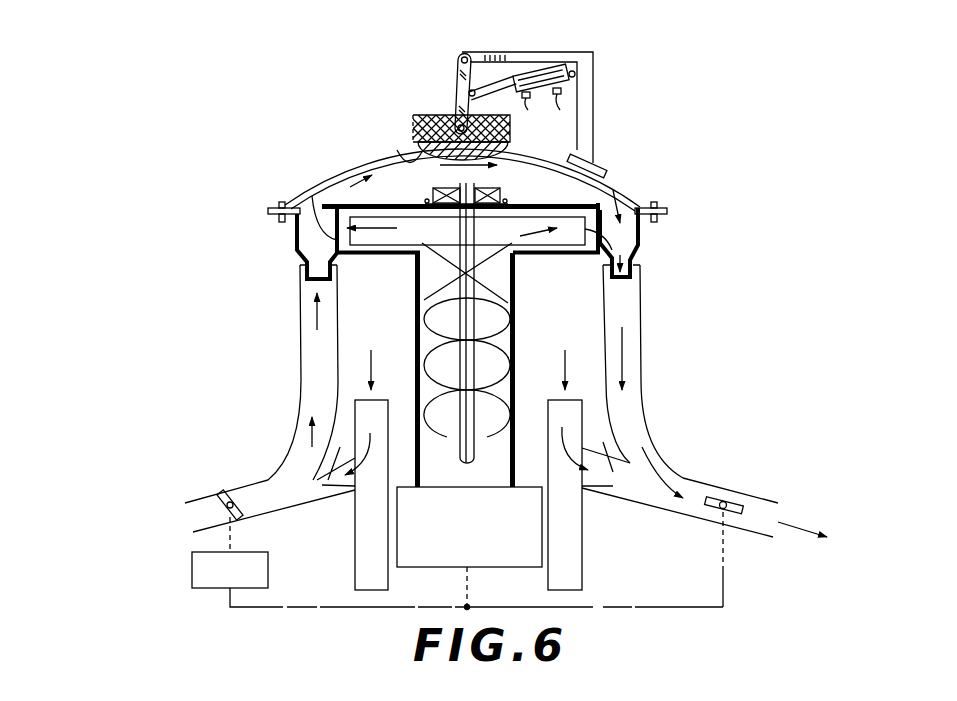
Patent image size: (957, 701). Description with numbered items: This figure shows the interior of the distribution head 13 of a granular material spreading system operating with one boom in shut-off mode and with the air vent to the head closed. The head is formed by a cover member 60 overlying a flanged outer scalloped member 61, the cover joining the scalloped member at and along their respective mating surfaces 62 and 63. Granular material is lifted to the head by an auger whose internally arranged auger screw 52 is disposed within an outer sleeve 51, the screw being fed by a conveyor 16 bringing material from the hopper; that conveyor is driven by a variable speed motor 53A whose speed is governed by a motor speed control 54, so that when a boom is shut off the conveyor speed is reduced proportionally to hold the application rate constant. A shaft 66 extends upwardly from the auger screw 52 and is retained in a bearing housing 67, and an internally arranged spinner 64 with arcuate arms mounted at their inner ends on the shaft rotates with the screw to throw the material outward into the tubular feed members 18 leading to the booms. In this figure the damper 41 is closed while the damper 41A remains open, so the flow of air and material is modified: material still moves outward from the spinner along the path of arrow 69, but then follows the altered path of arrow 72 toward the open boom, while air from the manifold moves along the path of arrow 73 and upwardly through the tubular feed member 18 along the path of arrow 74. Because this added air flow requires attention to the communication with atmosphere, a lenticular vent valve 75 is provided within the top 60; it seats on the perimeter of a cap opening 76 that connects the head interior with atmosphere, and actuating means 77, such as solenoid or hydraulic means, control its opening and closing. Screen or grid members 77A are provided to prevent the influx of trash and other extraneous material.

The distribution head 13 is at (690, 335).
The conveyor 16 is at (197, 498).
The tubular feed member 18 is at (300, 365).
The damper 41 is at (237, 490).
The damper 41A is at (717, 497).
The outer sleeve 51 is at (515, 323).
The auger screw 52 is at (420, 327).
The variable speed motor 53A is at (507, 567).
The motor speed control 54 is at (207, 590).
The cover member 60 is at (340, 170).
The flanged outer scalloped member 61 is at (643, 240).
The mating surface 62 is at (663, 200).
The mating surface 63 is at (272, 222).
The spinner 64 is at (510, 239).
The shaft 66 is at (457, 448).
The bearing housing 67 is at (493, 197).
The path of arrow 69 is at (587, 228).
The path of arrow 72 is at (320, 183).
The path of arrow 73 is at (303, 443).
The path of arrow 74 is at (317, 327).
The vent valve 75 is at (447, 115).
The cap opening 76 is at (398, 157).
The actuating means 77 is at (541, 73).
The screen or grid members 77A is at (507, 133).